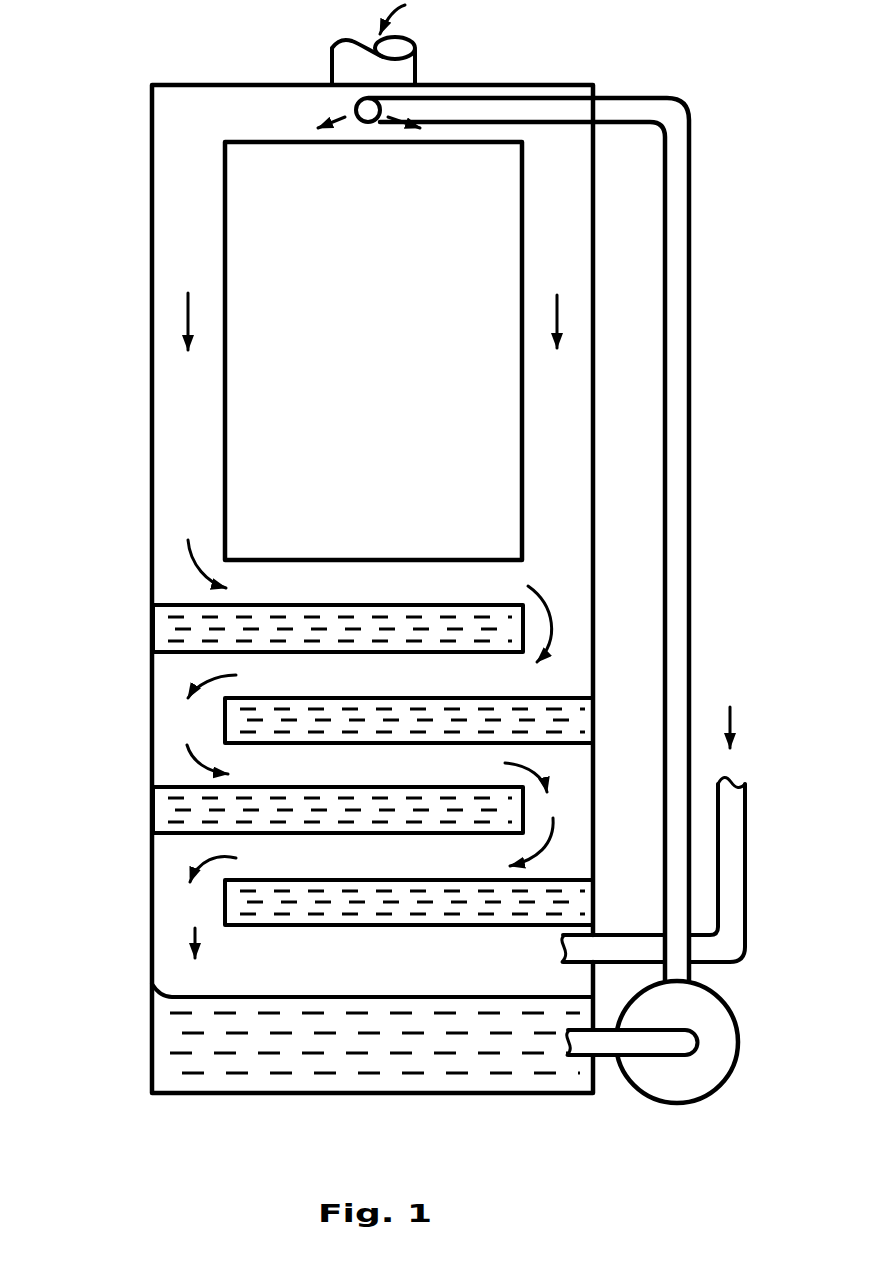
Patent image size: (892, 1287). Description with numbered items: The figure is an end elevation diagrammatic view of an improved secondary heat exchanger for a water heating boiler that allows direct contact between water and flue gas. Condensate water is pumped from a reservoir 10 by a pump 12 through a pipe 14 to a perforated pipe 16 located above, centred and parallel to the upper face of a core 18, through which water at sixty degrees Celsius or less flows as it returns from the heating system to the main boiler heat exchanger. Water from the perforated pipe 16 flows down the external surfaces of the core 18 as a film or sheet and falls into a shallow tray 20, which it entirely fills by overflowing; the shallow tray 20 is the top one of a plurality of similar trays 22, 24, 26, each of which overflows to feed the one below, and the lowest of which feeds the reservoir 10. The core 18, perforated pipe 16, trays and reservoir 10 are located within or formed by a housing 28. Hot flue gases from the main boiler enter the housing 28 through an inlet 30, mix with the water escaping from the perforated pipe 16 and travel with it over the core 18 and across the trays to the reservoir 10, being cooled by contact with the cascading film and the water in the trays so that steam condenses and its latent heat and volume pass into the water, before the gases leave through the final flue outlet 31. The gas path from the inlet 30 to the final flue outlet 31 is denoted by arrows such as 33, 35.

The reservoir 10 is at (170, 1043).
The pump 12 is at (736, 1062).
The pipe 14 is at (690, 678).
The perforated pipe 16 is at (367, 123).
The core 18 is at (384, 331).
The shallow tray 20 is at (153, 630).
The tray 22 is at (225, 720).
The tray 24 is at (170, 820).
The tray 26 is at (225, 907).
The housing 28 is at (150, 220).
The inlet 30 is at (332, 62).
The final flue outlet 31 is at (745, 852).
The arrow 33 is at (188, 553).
The arrow 35 is at (178, 864).